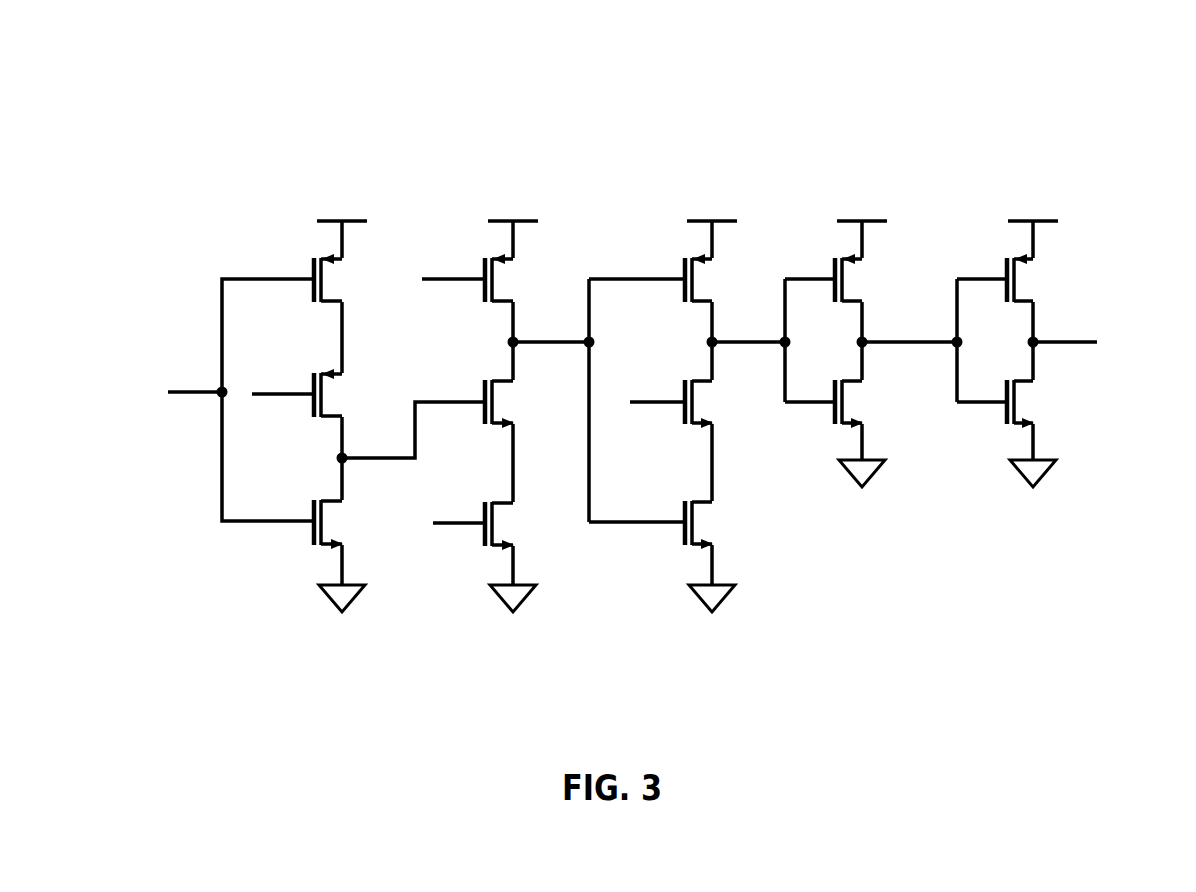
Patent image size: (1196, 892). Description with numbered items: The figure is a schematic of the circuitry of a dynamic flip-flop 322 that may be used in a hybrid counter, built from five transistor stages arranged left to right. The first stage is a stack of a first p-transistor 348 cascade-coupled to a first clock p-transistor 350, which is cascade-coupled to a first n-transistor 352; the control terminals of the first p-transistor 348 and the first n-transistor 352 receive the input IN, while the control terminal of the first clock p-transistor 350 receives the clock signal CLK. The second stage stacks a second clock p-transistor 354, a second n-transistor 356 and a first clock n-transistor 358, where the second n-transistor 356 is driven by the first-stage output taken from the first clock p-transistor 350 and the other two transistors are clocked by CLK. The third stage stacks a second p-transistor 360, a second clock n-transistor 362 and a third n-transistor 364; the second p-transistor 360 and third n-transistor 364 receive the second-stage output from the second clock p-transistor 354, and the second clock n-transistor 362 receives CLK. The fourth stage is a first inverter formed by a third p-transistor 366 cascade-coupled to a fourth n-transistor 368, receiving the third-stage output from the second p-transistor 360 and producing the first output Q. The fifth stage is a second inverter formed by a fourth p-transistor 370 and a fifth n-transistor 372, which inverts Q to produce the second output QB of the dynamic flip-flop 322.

The dynamic flip-flop 322 is at (1115, 94).
The first p-transistor 348 is at (307, 271).
The first clock p-transistor 350 is at (305, 403).
The first n-transistor 352 is at (307, 532).
The second clock p-transistor 354 is at (477, 290).
The second n-transistor 356 is at (477, 413).
The first clock n-transistor 358 is at (482, 542).
The second p-transistor 360 is at (680, 272).
The second clock n-transistor 362 is at (677, 413).
The third n-transistor 364 is at (680, 533).
The third p-transistor 366 is at (827, 272).
The fourth n-transistor 368 is at (823, 412).
The fourth p-transistor 370 is at (992, 270).
The fifth n-transistor 372 is at (988, 408).